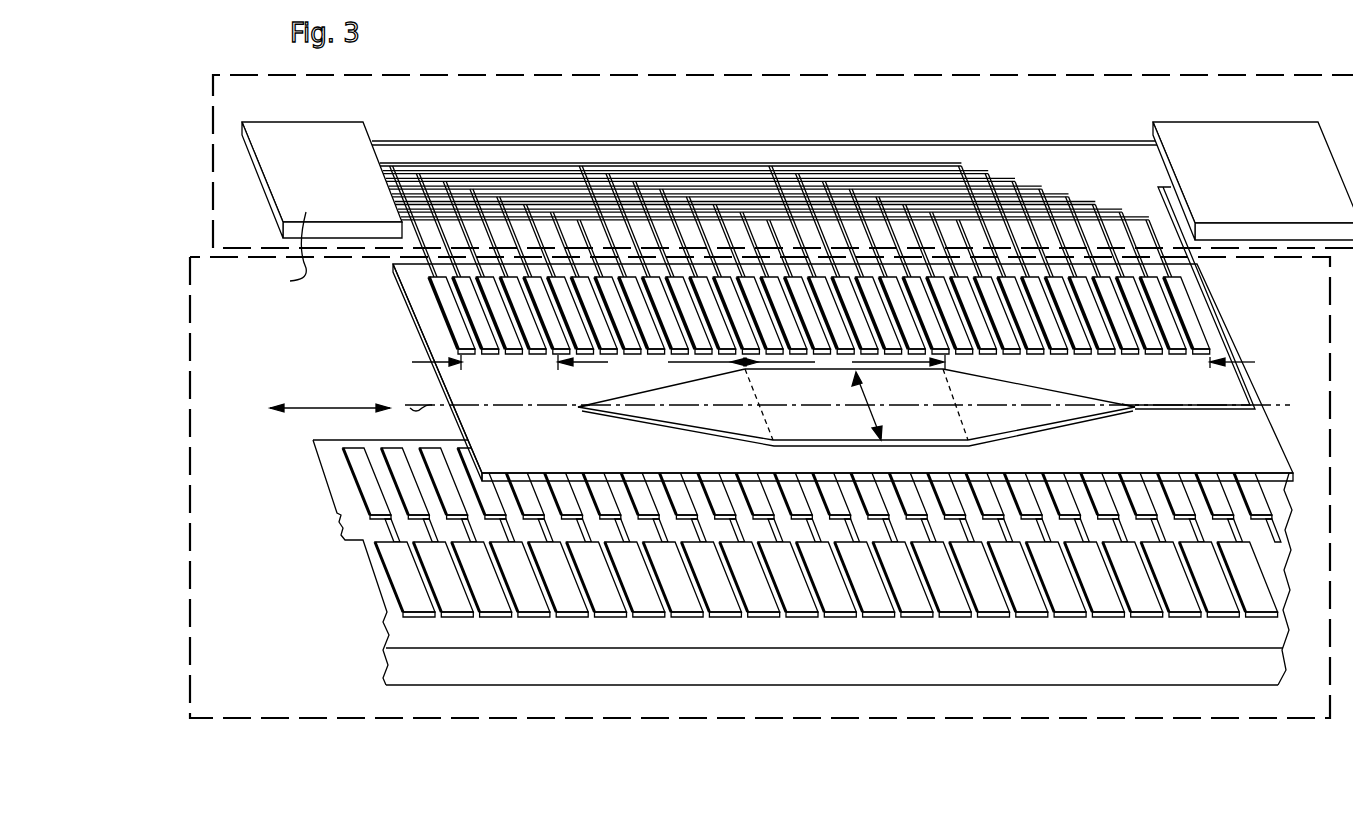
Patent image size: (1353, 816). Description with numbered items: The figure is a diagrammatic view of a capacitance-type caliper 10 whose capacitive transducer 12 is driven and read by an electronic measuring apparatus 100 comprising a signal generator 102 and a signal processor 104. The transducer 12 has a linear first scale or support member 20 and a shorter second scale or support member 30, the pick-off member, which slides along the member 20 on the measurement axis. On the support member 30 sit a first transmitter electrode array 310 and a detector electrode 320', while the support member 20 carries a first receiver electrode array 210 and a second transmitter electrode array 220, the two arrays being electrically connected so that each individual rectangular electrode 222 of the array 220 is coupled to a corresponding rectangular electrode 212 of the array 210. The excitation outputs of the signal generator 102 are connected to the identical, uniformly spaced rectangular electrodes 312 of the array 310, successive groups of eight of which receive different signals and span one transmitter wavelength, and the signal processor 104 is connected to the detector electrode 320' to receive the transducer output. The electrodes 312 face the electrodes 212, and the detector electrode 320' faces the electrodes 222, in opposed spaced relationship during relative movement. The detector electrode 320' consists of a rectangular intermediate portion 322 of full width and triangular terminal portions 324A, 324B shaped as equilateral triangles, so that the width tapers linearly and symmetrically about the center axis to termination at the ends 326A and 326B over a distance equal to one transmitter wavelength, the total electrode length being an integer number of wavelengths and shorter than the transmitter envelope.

The caliper 10 is at (786, 14).
The electronic measuring apparatus 100 is at (893, 68).
The signal generator 102 is at (328, 162).
The signal processor 104 is at (1283, 130).
The capacitive transducer 12 is at (480, 730).
The first scale or support member 20 is at (774, 577).
The first receiver electrode array 210 is at (769, 491).
The first receiver electrodes 212 is at (372, 496).
The second transmitter electrode array 220 is at (776, 578).
The second transmitter electrodes 222 is at (407, 580).
The second scale or support member 30 is at (781, 322).
The first transmitter electrode array 310 is at (782, 258).
The first transmitter electrodes 312 is at (1080, 288).
The detector electrode 320' is at (847, 422).
The rectangular intermediate portion 322 is at (856, 427).
The triangular terminal portion 324A is at (702, 418).
The triangular terminal portion 324B is at (1072, 416).
The end of detector electrode 326A is at (578, 407).
The end of detector electrode 326B is at (1122, 412).